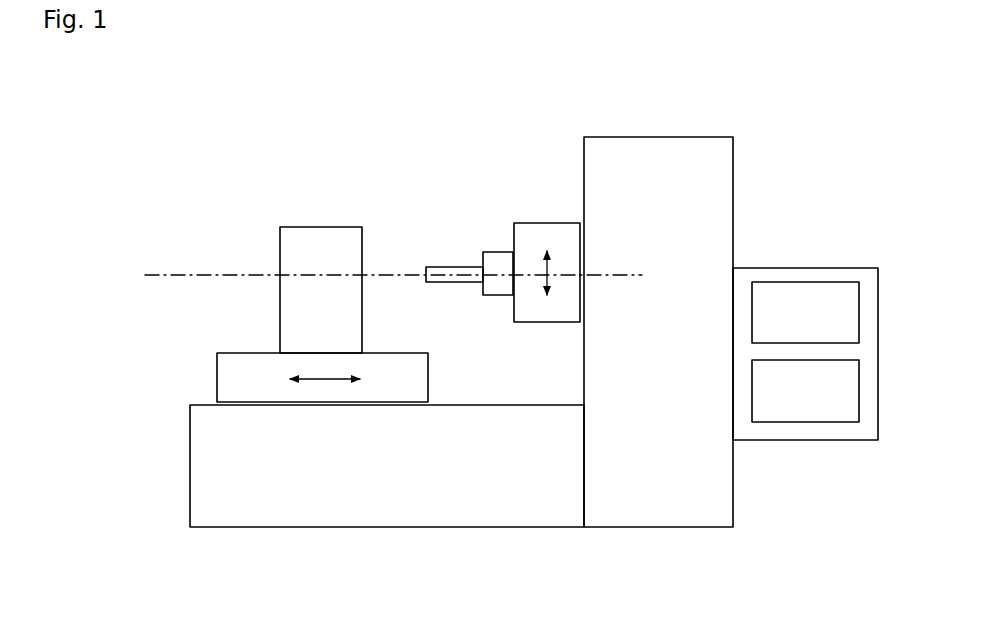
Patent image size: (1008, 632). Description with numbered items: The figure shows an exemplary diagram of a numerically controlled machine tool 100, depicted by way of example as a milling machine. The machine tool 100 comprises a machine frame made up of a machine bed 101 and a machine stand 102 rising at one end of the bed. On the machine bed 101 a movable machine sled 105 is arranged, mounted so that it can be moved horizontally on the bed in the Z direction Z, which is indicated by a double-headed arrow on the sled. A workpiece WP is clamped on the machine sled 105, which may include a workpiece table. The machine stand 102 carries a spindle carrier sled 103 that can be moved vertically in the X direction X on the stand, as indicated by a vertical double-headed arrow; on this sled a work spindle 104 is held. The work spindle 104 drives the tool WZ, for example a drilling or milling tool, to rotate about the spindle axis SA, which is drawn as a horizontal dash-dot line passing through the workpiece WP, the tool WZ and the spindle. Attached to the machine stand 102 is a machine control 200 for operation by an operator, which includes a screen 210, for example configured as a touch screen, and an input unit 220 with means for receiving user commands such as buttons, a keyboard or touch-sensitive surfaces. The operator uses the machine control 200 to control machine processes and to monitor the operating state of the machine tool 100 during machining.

The numerically controlled machine tool 100 is at (664, 114).
The machine bed 101 is at (388, 527).
The machine stand 102 is at (733, 170).
The spindle carrier sled 103 is at (543, 223).
The work spindle 104 is at (497, 252).
The machine sled 105 is at (217, 377).
The machine control 200 is at (822, 440).
The screen 210 is at (805, 312).
The input unit 220 is at (805, 391).
The spindle axis SA is at (170, 275).
The workpiece WP is at (280, 242).
The tool WZ is at (443, 268).
The X direction X is at (550, 288).
The Z direction Z is at (335, 382).